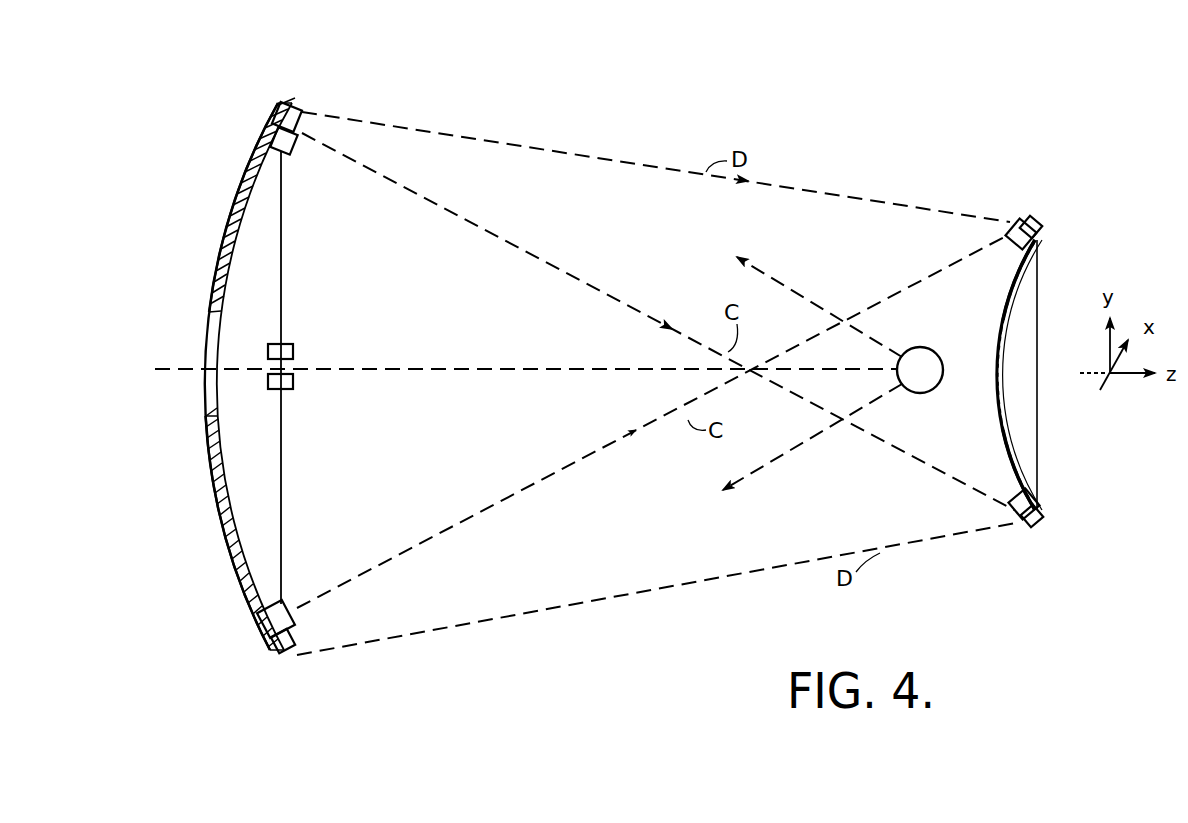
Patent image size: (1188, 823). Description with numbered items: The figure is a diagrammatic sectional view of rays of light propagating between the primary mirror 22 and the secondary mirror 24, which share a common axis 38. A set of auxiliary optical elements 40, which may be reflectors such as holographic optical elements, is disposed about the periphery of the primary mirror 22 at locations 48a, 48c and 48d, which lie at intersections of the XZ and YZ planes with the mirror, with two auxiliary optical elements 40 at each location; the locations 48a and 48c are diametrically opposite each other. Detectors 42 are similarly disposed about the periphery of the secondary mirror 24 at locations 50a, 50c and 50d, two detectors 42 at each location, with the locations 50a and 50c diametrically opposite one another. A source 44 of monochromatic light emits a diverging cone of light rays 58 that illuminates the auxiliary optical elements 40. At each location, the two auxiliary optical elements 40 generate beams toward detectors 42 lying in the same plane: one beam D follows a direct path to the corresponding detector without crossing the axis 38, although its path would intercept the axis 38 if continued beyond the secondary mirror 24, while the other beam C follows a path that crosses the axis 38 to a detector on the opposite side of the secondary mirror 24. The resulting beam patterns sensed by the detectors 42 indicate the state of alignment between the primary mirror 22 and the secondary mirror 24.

The primary mirror 22 is at (210, 292).
The secondary mirror 24 is at (1038, 412).
The axis 38 is at (372, 367).
The auxiliary optical elements 40 is at (289, 107).
The detectors 42 is at (1024, 224).
The source of monochromatic light 44 is at (912, 393).
The location of auxiliary optical elements 48a is at (263, 183).
The location of auxiliary optical elements 48c is at (257, 592).
The location of auxiliary optical elements 48d is at (262, 333).
The detector location 50a is at (1030, 243).
The detector location 50c is at (1040, 512).
The detector location 50d is at (1038, 363).
The diverging cone of light rays 58 is at (802, 298).